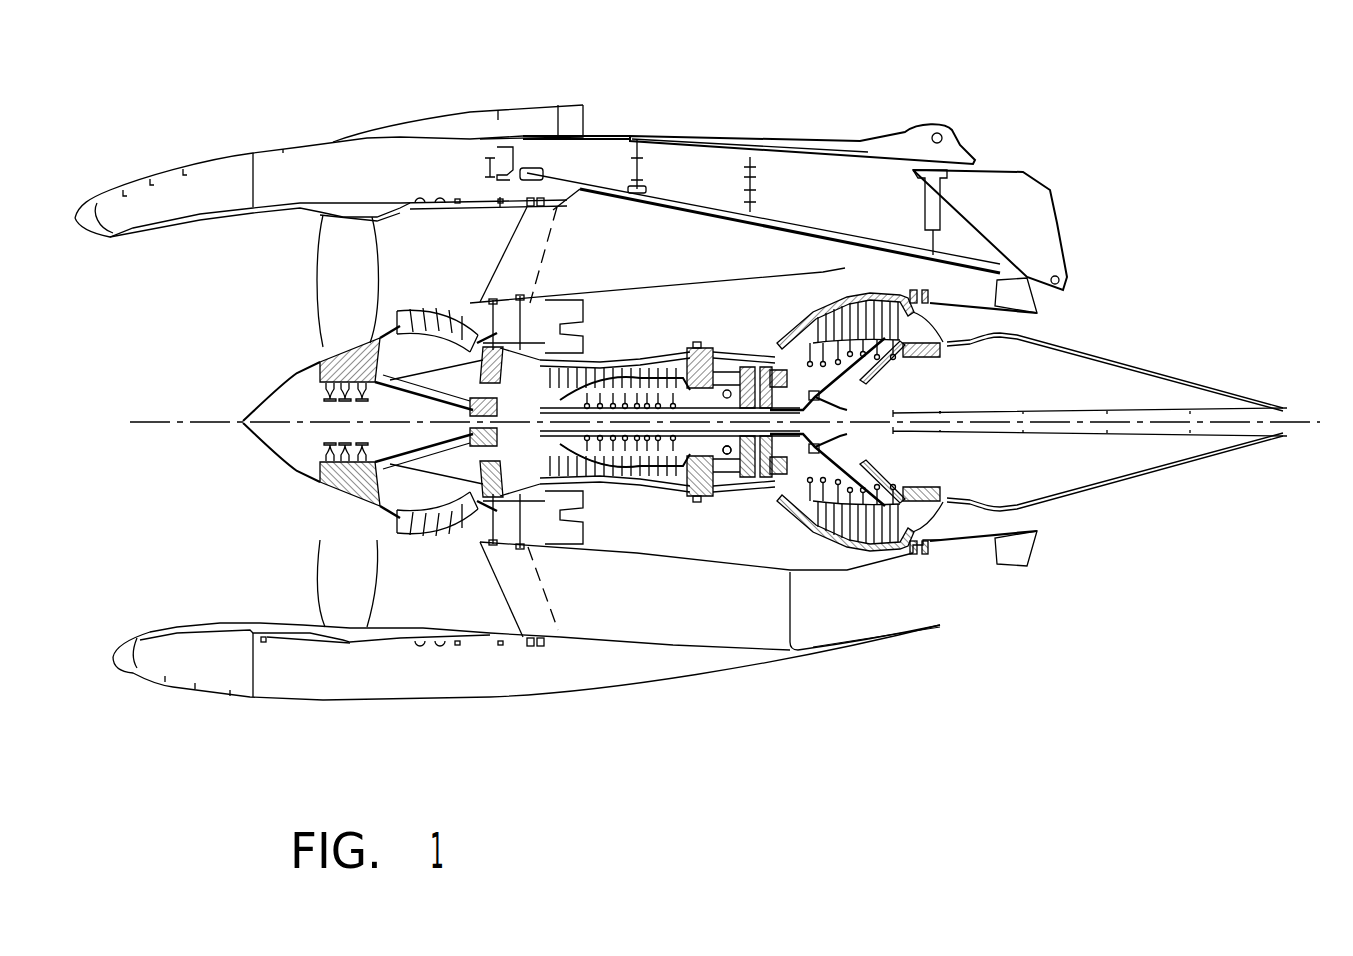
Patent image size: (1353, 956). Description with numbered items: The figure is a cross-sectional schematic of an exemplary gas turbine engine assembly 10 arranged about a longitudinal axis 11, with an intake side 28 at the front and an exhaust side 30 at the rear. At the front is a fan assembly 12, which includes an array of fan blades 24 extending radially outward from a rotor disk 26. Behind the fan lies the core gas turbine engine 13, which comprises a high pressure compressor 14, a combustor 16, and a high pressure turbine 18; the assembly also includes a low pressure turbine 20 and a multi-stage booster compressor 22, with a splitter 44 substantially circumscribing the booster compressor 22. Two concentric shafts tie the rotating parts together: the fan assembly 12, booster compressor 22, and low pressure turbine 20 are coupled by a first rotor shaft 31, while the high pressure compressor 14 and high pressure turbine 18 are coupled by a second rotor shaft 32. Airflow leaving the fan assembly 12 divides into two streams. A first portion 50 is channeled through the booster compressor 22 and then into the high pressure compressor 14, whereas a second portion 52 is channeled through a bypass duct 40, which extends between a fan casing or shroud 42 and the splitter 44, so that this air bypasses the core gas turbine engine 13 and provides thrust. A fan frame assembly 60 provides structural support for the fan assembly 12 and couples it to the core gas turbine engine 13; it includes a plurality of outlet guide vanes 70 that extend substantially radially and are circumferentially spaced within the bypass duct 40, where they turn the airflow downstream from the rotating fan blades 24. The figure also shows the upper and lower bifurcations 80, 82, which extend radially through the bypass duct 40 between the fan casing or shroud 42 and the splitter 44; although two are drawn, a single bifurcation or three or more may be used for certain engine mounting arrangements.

The gas turbine engine assembly 10 is at (836, 712).
The longitudinal axis 11 is at (190, 428).
The fan assembly 12 is at (342, 581).
The core gas turbine engine 13 is at (900, 582).
The high pressure compressor 14 is at (602, 336).
The combustor 16 is at (729, 326).
The high pressure turbine 18 is at (764, 328).
The low pressure turbine 20 is at (840, 276).
The multi-stage booster compressor 22 is at (455, 292).
The fan blades 24 is at (330, 263).
The rotor disk 26 is at (340, 370).
The intake side 28 is at (212, 318).
The exhaust side 30 is at (1055, 584).
The first rotor shaft 31 is at (680, 455).
The second rotor shaft 32 is at (727, 450).
The bypass duct 40 is at (462, 241).
The fan casing or shroud 42 is at (437, 628).
The splitter 44 is at (413, 542).
The first portion of the airflow 50 is at (385, 326).
The second portion of the airflow 52 is at (478, 258).
The fan frame assembly 60 is at (580, 670).
The outlet guide vanes 70 is at (560, 612).
The bifurcation 80 is at (656, 258).
The bifurcation 82 is at (656, 612).